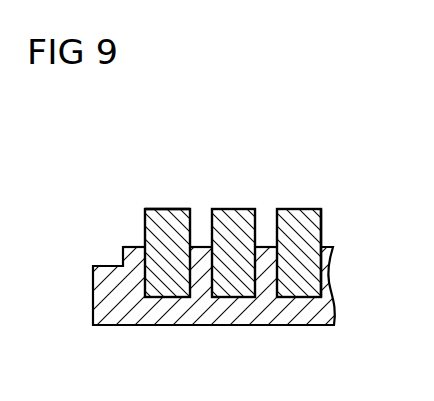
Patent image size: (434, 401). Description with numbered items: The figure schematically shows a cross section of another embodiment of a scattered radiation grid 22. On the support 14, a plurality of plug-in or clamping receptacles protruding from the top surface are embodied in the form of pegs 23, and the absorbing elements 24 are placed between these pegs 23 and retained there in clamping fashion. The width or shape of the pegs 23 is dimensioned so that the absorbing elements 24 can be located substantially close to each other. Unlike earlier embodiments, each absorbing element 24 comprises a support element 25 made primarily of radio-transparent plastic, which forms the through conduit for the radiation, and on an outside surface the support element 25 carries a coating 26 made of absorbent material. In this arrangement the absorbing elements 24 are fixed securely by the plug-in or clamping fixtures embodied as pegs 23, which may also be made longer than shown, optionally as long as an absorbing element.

The support 14 is at (211, 320).
The scattered radiation grid 22 is at (228, 219).
The pegs 23 is at (134, 246).
The absorbing elements 24 is at (146, 180).
The support element 25 is at (162, 212).
The coating 26 is at (322, 230).